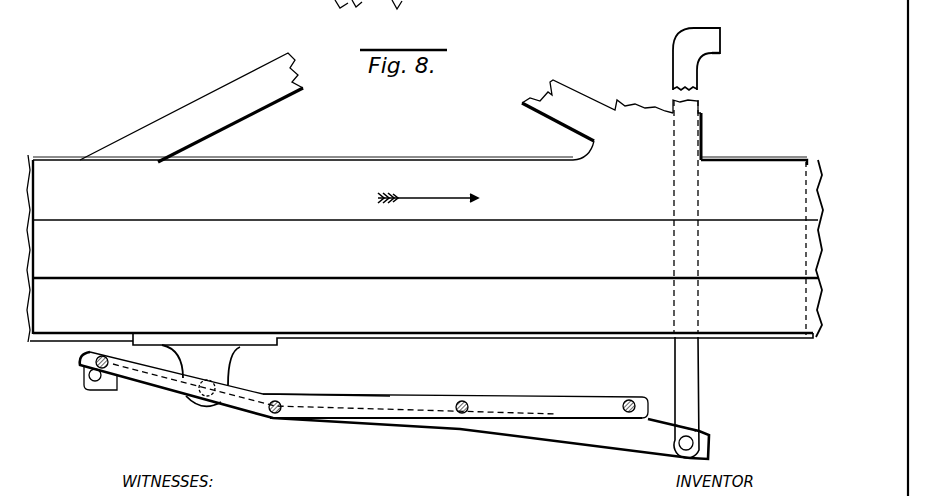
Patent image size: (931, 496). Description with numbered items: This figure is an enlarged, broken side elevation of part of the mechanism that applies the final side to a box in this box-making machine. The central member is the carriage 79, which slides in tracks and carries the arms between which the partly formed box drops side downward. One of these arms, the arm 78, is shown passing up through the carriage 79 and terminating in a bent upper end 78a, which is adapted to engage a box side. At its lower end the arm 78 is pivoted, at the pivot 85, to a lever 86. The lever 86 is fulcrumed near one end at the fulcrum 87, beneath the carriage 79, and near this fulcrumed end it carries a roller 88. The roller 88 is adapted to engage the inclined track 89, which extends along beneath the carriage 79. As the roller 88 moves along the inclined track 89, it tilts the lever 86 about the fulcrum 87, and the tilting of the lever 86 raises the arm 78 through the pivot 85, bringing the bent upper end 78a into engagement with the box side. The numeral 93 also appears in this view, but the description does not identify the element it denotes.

The arm 78 is at (673, 72).
The bent upper end 78a is at (702, 33).
The carriage 79 is at (425, 199).
The pivot 85 is at (680, 452).
The lever 86 is at (570, 440).
The fulcrum 87 is at (205, 396).
The roller 88 is at (95, 381).
The inclined track 89 is at (337, 402).
The link 93 is at (367, 16).